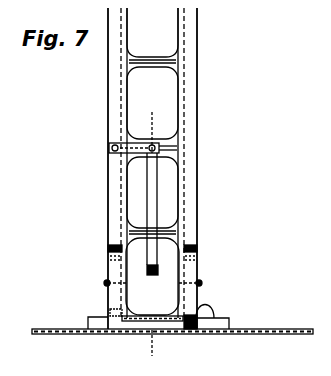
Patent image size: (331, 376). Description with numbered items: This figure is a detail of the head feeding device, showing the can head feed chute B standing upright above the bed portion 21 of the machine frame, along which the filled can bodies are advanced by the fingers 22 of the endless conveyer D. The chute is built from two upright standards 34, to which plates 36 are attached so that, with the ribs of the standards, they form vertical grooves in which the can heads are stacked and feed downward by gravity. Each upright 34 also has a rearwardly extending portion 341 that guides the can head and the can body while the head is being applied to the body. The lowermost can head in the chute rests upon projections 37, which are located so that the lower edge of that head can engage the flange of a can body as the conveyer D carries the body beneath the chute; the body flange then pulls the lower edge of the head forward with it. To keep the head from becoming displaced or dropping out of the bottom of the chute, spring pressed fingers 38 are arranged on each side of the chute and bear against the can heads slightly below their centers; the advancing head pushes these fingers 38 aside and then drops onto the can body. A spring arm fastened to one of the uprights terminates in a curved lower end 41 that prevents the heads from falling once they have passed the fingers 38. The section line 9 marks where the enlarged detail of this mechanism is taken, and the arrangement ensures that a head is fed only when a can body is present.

The section line 9 is at (162, 124).
The bed portion 21 is at (253, 334).
The fingers or flights 22 is at (191, 334).
The upright standards 34 is at (108, 117).
The rearwardly extending portion 341 is at (107, 257).
The plates 36 is at (110, 208).
The projections 37 is at (115, 311).
The spring pressed fingers 38 is at (176, 283).
The curved lower end 41 is at (198, 248).
The can head feed chute B is at (70, 81).
The endless conveyer D is at (200, 318).